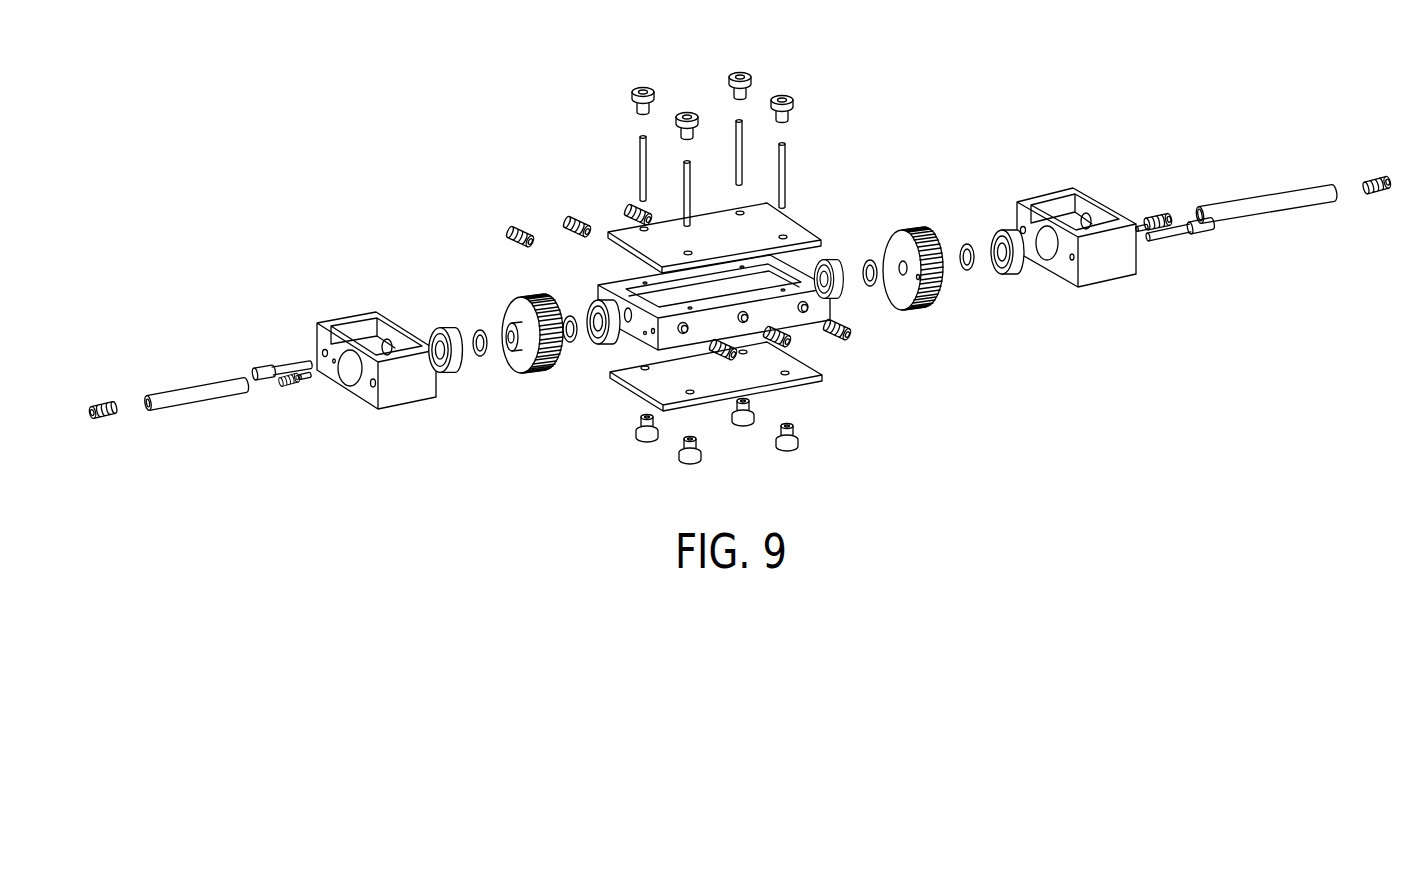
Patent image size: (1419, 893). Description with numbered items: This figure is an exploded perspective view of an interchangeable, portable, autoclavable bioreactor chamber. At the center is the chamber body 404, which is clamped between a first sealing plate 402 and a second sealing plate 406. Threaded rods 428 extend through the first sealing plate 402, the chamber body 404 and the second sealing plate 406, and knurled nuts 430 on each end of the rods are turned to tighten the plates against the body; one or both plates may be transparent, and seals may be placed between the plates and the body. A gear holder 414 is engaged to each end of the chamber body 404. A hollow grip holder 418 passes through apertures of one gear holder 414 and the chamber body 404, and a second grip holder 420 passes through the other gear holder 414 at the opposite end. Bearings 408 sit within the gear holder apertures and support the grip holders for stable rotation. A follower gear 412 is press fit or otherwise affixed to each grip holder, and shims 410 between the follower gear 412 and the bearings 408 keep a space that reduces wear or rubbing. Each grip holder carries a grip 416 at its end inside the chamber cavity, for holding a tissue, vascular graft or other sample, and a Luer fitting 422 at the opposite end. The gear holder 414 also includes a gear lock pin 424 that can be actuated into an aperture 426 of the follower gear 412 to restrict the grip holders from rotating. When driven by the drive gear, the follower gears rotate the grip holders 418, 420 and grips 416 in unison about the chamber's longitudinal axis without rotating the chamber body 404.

The first sealing plate 402 is at (652, 380).
The chamber body 404 is at (633, 333).
The second sealing plate 406 is at (798, 228).
The bearings 408 is at (838, 272).
The shims 410 is at (482, 333).
The follower gear 412 is at (522, 362).
The gear holder 414 is at (407, 400).
The grip 416 is at (293, 383).
The grip holder 418 is at (198, 398).
The grip holder 420 is at (1257, 200).
The Luer fitting 422 is at (522, 228).
The gear lock pin 424 is at (1170, 235).
The aperture 426 is at (932, 282).
The threaded rods 428 is at (782, 177).
The knurled nuts 430 is at (780, 97).